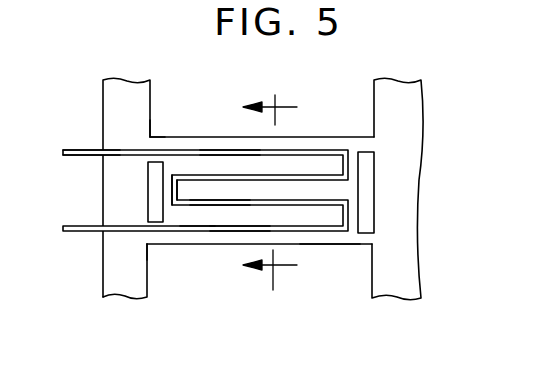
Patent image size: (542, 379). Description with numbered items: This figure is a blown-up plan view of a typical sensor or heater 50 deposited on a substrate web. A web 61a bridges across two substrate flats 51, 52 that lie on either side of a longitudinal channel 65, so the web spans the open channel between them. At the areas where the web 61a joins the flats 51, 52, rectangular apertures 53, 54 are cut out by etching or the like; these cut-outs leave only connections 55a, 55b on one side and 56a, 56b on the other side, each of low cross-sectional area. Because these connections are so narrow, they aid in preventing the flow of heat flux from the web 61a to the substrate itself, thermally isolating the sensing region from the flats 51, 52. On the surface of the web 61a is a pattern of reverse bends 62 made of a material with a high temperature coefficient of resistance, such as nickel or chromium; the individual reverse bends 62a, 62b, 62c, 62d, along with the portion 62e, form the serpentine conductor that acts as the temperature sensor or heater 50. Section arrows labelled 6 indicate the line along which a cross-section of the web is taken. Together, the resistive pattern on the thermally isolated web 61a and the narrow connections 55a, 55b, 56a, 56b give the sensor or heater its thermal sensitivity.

The sensor or heater 50 is at (314, 158).
The substrate flat 51 is at (402, 105).
The substrate flat 52 is at (118, 94).
The rectangular aperture 53 is at (365, 200).
The rectangular aperture 54 is at (148, 186).
The connection 55a is at (372, 145).
The connection 55b is at (370, 239).
The connection 56a is at (138, 142).
The connection 56b is at (150, 238).
The web 61a is at (328, 244).
The pattern of reverse bends 62 is at (92, 232).
The reverse bend 62a is at (238, 231).
The reverse bend 62b is at (213, 205).
The reverse bend 62c is at (182, 174).
The reverse bend 62d is at (228, 152).
The upper arm end of strip 62e is at (78, 148).
The longitudinal channel 65 is at (197, 285).
The section line 6- 6 is at (270, 196).